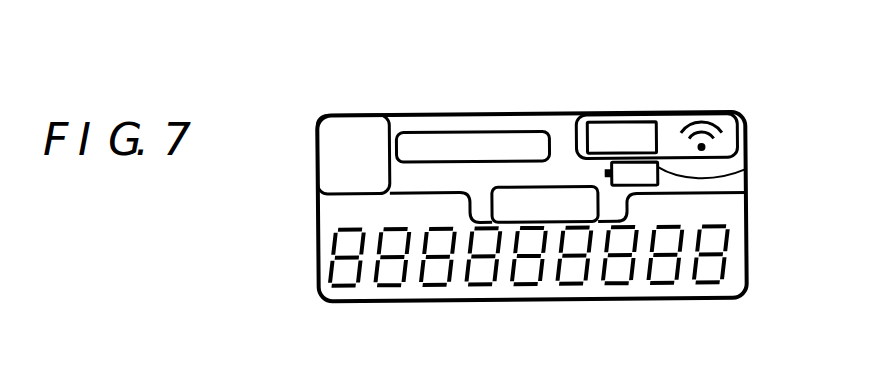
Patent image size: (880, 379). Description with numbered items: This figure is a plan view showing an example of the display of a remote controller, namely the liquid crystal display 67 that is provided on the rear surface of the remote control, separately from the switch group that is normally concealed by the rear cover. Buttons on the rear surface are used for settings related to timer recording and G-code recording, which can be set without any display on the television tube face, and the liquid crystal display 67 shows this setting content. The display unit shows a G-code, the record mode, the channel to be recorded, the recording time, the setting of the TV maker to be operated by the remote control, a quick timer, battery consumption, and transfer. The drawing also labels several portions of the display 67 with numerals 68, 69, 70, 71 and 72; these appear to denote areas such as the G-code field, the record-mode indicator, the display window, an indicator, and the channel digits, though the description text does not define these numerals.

The liquid crystal display 67 is at (580, 110).
The G code display portion 68 is at (577, 187).
The recording mode display portion 69 is at (472, 131).
The display window 70 is at (632, 113).
The indicator portion 71 is at (722, 175).
The channel display portion 72 is at (398, 300).